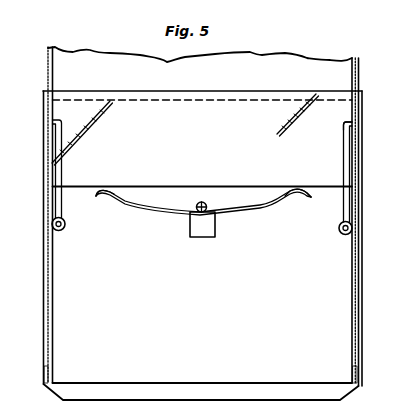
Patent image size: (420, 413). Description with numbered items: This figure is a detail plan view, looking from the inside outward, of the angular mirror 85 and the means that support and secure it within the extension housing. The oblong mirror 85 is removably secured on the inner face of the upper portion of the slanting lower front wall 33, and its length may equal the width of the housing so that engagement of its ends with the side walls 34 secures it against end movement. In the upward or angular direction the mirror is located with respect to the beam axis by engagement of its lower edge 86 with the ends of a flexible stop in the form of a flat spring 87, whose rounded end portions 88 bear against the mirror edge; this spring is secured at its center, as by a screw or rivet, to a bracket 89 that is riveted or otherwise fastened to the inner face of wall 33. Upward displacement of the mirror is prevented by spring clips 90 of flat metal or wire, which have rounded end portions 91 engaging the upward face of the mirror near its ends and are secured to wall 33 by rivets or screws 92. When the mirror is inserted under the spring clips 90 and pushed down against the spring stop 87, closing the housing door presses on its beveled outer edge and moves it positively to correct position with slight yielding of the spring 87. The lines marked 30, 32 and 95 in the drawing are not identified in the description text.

The base 30 is at (190, 398).
The outer casing 32 is at (181, 238).
The slanting lower front wall 33 is at (203, 350).
The side walls 34 is at (46, 283).
The angular mirror 85 is at (162, 189).
The lower edge 86 is at (253, 193).
The flat spring 87 is at (168, 212).
The rounded end portions 88 is at (107, 195).
The bracket 89 is at (201, 228).
The spring clips 90 is at (345, 170).
The rounded end portions 91 is at (346, 122).
The rivets or screws 92 is at (339, 234).
The diagonal brace 95 is at (297, 97).